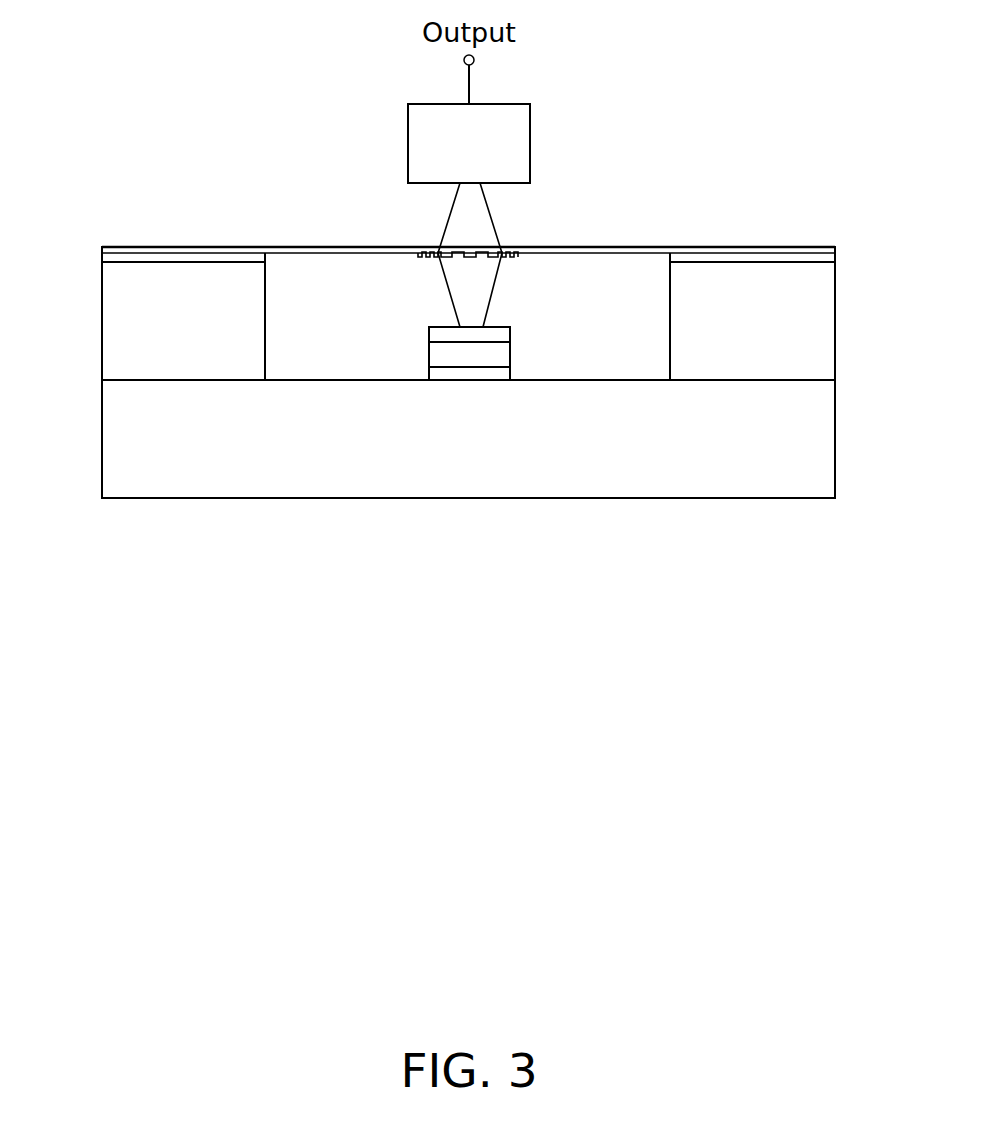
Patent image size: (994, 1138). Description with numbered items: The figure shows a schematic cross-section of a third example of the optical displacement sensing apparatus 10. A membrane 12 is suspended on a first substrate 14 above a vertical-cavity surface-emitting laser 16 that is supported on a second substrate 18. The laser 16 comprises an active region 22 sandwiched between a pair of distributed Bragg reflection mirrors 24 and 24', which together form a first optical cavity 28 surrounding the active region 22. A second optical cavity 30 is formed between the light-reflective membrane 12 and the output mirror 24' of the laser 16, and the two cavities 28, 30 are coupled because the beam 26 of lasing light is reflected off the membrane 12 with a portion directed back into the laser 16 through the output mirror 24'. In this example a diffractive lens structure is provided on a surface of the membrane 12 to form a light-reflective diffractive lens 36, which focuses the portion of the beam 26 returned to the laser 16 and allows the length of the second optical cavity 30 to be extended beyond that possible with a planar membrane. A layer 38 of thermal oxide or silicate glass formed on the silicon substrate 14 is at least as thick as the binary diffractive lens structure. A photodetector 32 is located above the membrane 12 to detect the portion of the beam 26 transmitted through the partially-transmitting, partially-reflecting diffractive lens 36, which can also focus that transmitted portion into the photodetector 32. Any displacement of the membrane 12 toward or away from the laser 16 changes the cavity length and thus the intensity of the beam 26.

The optical displacement sensing apparatus 10 is at (796, 532).
The membrane 12 is at (344, 246).
The first substrate 14 is at (192, 336).
The vertical-cavity surface-emitting laser 16 is at (485, 326).
The second substrate 18 is at (192, 455).
The active region 22 is at (429, 355).
The distributed Bragg reflection mirror 24 is at (469, 394).
The output mirror 24' is at (437, 332).
The beam of lasing light 26 is at (457, 283).
The first optical cavity 28 is at (513, 327).
The second optical cavity 30 is at (416, 262).
The photodetector 32 is at (456, 158).
The light-reflective diffractive lens 36 is at (467, 258).
The layer of thermal oxide 38 is at (102, 255).